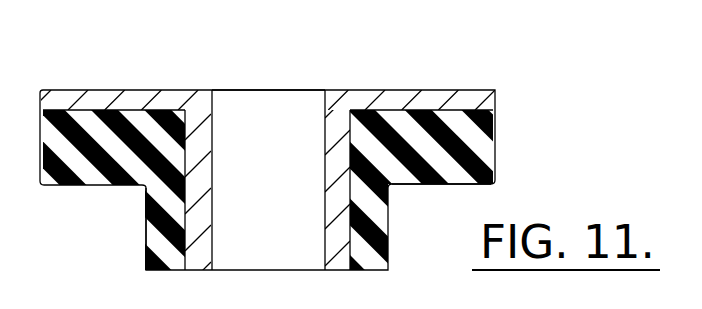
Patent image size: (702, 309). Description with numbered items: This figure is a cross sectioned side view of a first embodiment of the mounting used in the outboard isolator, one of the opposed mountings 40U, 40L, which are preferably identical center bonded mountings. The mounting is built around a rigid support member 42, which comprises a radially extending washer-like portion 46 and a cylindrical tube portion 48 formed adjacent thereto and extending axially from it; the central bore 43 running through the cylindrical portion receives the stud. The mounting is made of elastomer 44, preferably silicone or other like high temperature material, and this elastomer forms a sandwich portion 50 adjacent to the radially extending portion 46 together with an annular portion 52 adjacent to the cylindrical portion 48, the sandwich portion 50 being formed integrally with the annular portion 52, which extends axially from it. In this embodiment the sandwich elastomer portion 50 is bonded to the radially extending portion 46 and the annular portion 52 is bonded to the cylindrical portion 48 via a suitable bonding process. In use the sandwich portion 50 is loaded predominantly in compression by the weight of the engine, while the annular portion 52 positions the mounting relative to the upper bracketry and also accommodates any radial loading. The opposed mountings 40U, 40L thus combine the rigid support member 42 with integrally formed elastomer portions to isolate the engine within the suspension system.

The opposed mounting 40U is at (324, 168).
The opposed mounting 40L is at (324, 168).
The rigid support member 42 is at (356, 86).
The bore 43 is at (212, 118).
The elastomer 44 is at (483, 153).
The radially extending washer-like portion 46 is at (60, 100).
The cylindrical tube portion 48 is at (337, 247).
The sandwich portion 50 is at (494, 186).
The annular portion 52 is at (143, 272).